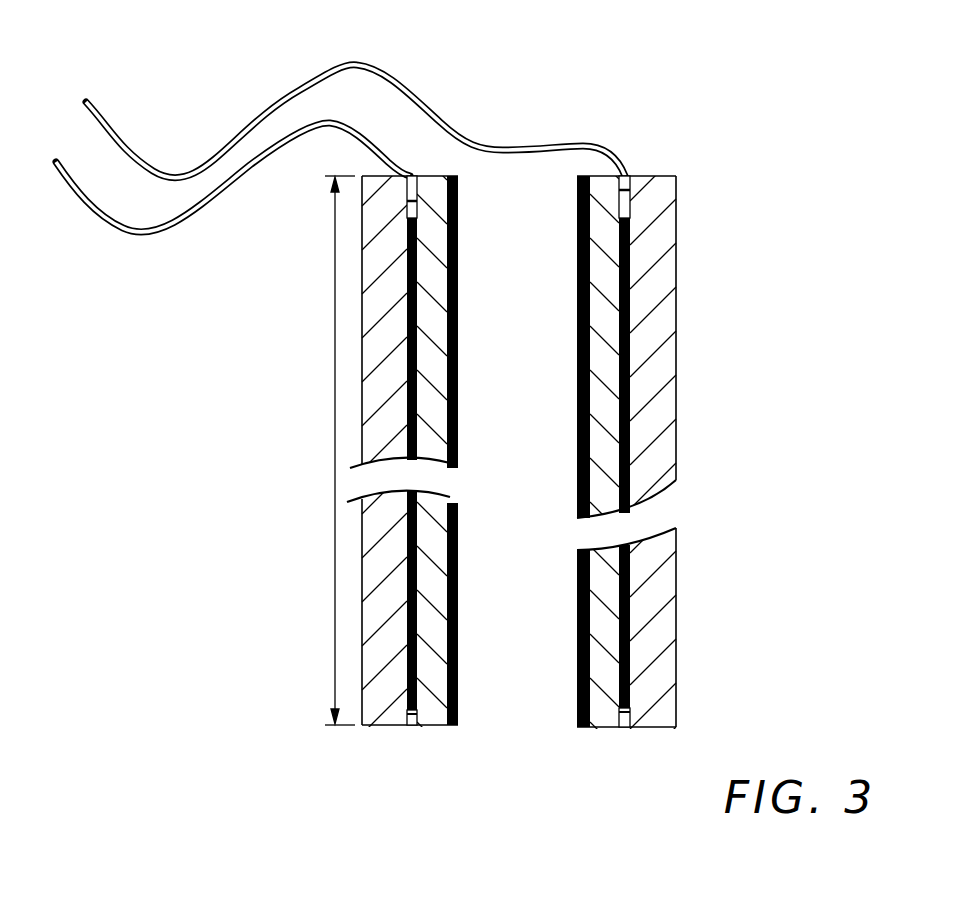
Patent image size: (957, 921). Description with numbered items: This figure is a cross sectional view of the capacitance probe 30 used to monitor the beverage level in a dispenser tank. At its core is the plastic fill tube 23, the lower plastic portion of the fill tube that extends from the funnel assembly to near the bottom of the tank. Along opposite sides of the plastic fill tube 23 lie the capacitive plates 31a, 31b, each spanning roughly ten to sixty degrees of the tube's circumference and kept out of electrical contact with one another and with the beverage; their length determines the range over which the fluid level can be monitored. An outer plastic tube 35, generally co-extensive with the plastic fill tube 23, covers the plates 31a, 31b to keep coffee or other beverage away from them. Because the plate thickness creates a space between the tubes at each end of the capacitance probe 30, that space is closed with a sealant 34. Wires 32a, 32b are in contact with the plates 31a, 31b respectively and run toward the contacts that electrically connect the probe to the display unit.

The capacitance probe 30 is at (660, 116).
The plastic fill tube 23 is at (610, 282).
The capacitive plate 31a is at (407, 323).
The capacitive plate 31b is at (633, 350).
The wire 32a is at (108, 230).
The wire 32b is at (450, 117).
The sealant 34 is at (416, 190).
The plastic tube 35 is at (665, 583).